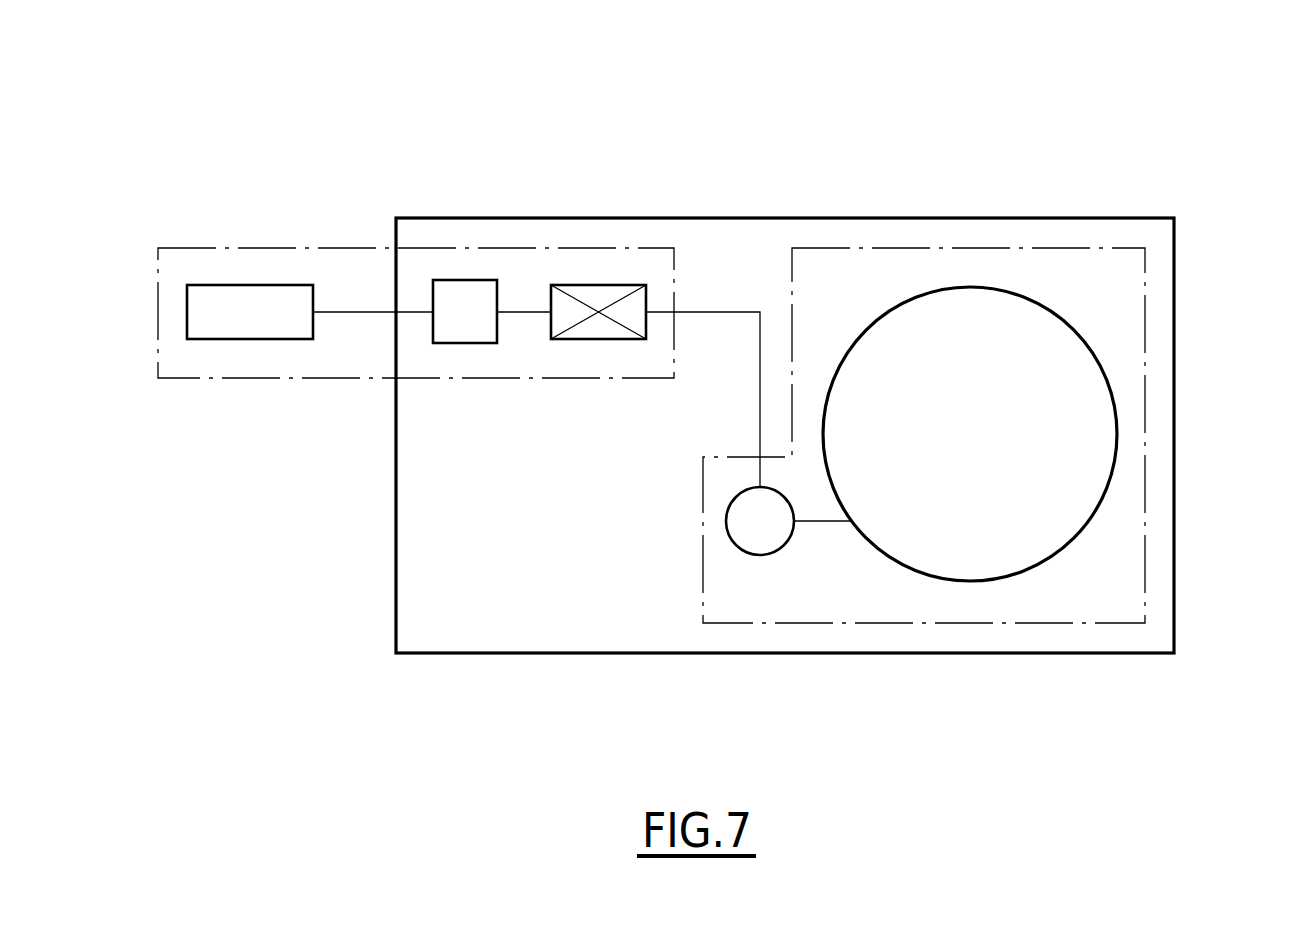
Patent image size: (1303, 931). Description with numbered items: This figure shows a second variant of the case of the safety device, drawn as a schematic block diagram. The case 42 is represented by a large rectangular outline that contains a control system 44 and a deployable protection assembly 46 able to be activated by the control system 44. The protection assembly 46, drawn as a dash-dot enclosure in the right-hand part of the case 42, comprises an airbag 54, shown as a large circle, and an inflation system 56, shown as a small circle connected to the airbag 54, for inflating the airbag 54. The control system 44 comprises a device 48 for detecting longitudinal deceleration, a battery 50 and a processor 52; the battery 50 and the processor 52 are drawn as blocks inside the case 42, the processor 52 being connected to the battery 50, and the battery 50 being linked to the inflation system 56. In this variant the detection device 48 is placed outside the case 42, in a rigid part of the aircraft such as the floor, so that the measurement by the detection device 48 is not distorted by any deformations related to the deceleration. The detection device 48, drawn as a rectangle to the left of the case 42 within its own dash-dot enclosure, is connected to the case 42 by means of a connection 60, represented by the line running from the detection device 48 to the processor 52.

The case 42 is at (1115, 146).
The control system 44 is at (460, 248).
The deployable protection assembly 46 is at (1145, 300).
The device for detecting longitudinal deceleration 48 is at (224, 305).
The battery 50 is at (580, 285).
The processor 52 is at (453, 325).
The airbag 54 is at (1070, 448).
The inflation system 56 is at (757, 530).
The connection 60 is at (340, 310).